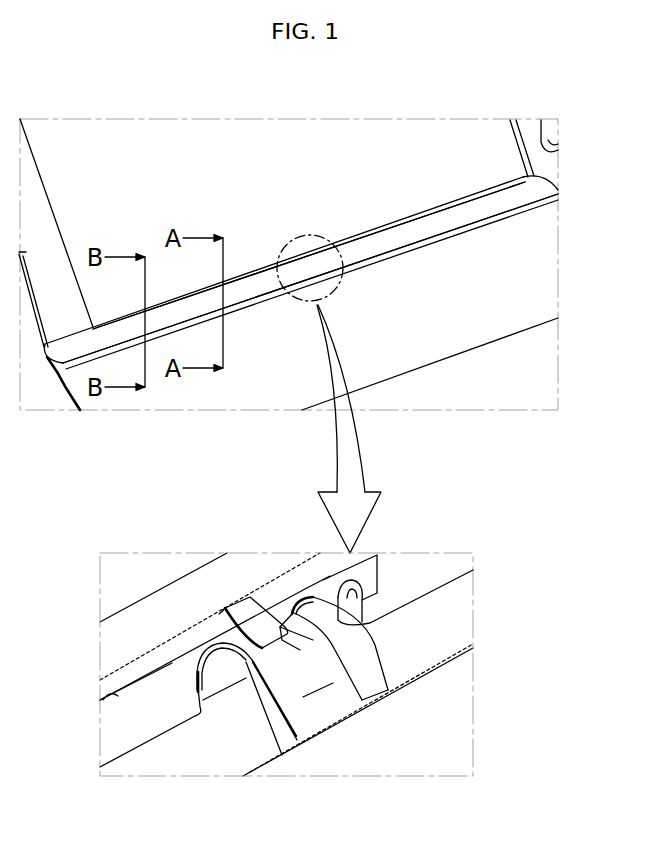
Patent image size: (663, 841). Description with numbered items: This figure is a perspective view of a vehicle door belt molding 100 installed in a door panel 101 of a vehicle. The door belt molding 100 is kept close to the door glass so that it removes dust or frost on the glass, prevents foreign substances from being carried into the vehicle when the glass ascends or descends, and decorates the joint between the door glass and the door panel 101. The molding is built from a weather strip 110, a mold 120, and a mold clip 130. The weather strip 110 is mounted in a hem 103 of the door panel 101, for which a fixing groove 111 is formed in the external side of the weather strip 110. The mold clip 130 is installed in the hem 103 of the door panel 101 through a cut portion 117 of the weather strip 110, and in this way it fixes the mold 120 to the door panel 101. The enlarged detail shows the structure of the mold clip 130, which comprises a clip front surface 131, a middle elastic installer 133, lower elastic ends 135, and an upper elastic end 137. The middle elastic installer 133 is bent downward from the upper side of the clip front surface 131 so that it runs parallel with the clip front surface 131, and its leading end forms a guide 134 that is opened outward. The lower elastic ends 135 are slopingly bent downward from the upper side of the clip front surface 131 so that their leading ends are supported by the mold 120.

The vehicle door belt molding 100 is at (403, 211).
The door panel 101 is at (534, 262).
The hem 103 is at (180, 757).
The weather strip 110 is at (438, 565).
The fixing groove 111 is at (368, 600).
The cut portion 117 is at (330, 600).
The mold 120 is at (475, 212).
The mold clip 130 is at (364, 661).
The clip front surface 131 is at (217, 680).
The middle elastic installer 133 is at (322, 683).
The guide 134 is at (303, 697).
The lower elastic ends 135 is at (285, 741).
The upper elastic end 137 is at (238, 603).